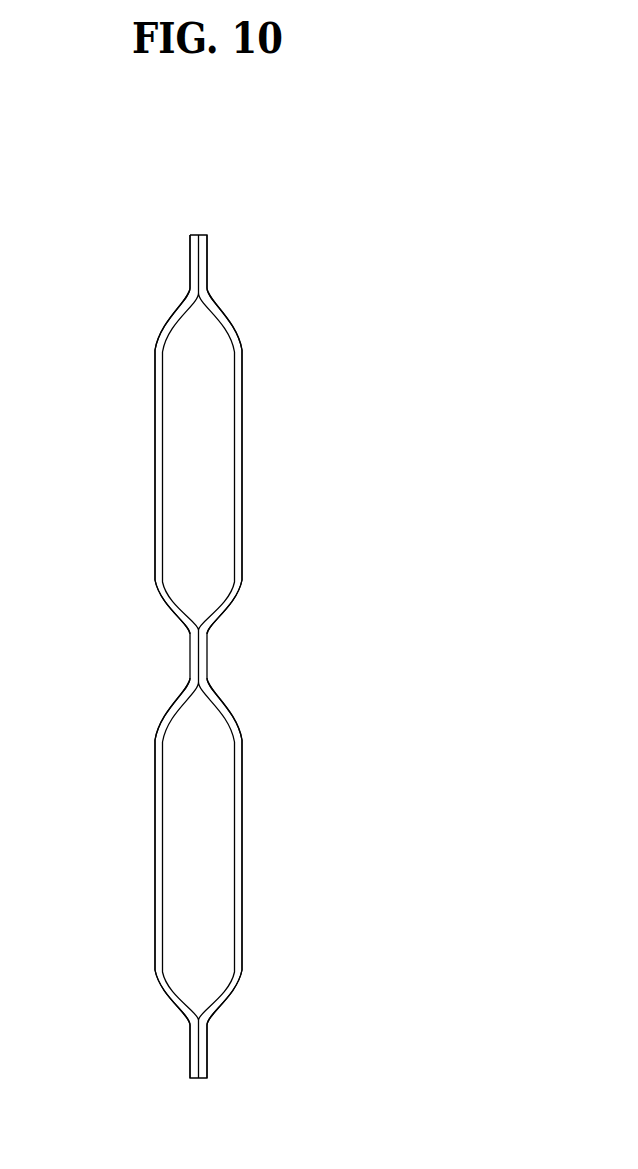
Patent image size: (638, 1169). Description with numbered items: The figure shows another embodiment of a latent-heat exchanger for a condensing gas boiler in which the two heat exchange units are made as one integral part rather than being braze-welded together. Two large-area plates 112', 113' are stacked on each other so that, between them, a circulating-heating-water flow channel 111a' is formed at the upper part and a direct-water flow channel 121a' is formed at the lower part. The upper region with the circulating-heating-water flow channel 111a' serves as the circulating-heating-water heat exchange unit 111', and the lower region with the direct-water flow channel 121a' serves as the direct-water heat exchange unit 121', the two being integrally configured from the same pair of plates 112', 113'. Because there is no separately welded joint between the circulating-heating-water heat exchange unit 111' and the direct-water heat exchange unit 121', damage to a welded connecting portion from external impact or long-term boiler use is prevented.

The circulating-heating-water heat exchange unit 111' is at (255, 458).
The circulating-heating-water flow channel 111a' is at (245, 461).
The large-area plate 112' is at (123, 656).
The large-area plate 113' is at (273, 656).
The direct-water heat exchange unit 121' is at (255, 878).
The direct-water flow channel 121a' is at (246, 851).